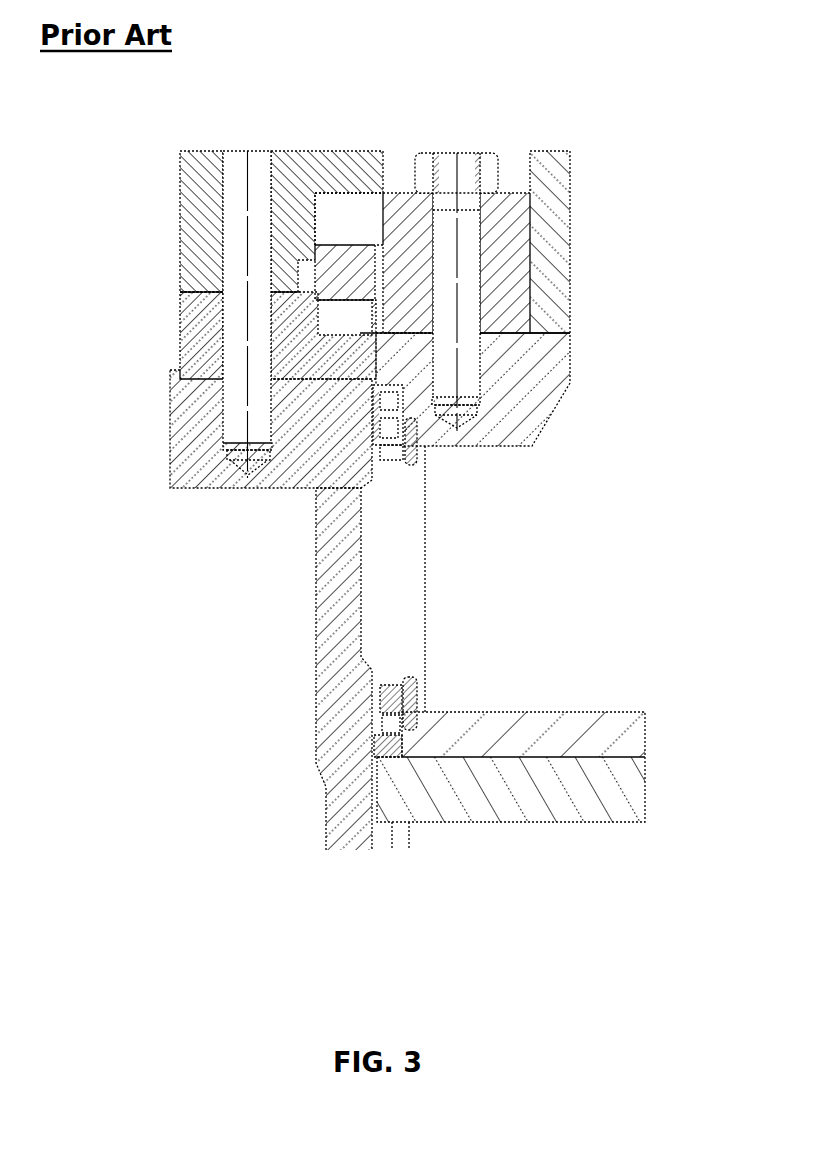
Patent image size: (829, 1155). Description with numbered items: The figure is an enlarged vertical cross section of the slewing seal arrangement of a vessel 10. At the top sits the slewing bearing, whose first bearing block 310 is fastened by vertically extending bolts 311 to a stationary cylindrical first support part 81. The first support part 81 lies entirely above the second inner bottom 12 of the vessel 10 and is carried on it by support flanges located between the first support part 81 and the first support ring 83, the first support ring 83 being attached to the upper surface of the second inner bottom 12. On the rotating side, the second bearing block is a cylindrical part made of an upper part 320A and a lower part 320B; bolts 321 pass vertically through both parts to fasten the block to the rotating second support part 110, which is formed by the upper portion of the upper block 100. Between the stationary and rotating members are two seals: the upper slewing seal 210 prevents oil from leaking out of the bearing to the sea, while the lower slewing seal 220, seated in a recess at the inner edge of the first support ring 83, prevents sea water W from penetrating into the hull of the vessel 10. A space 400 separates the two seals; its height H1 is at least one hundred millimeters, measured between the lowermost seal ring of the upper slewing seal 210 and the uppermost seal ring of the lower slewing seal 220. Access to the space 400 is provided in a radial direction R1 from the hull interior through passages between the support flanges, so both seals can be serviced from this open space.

The vessel 10 is at (728, 188).
The second inner bottom 12 is at (541, 800).
The first support part 81 is at (560, 352).
The first support ring 83 is at (550, 710).
The upper block 100 is at (318, 645).
The second support part 110 is at (180, 445).
The upper slewing seal 210 is at (397, 490).
The lower slewing seal 220 is at (397, 658).
The first bearing block 310 is at (516, 207).
The bolts 311 is at (450, 172).
The upper part 320A is at (150, 189).
The lower part 320B is at (183, 341).
The bolts 321 is at (237, 172).
The space 400 is at (413, 587).
The radial direction R1 is at (492, 584).
The height H1 is at (607, 435).
The water W is at (389, 859).